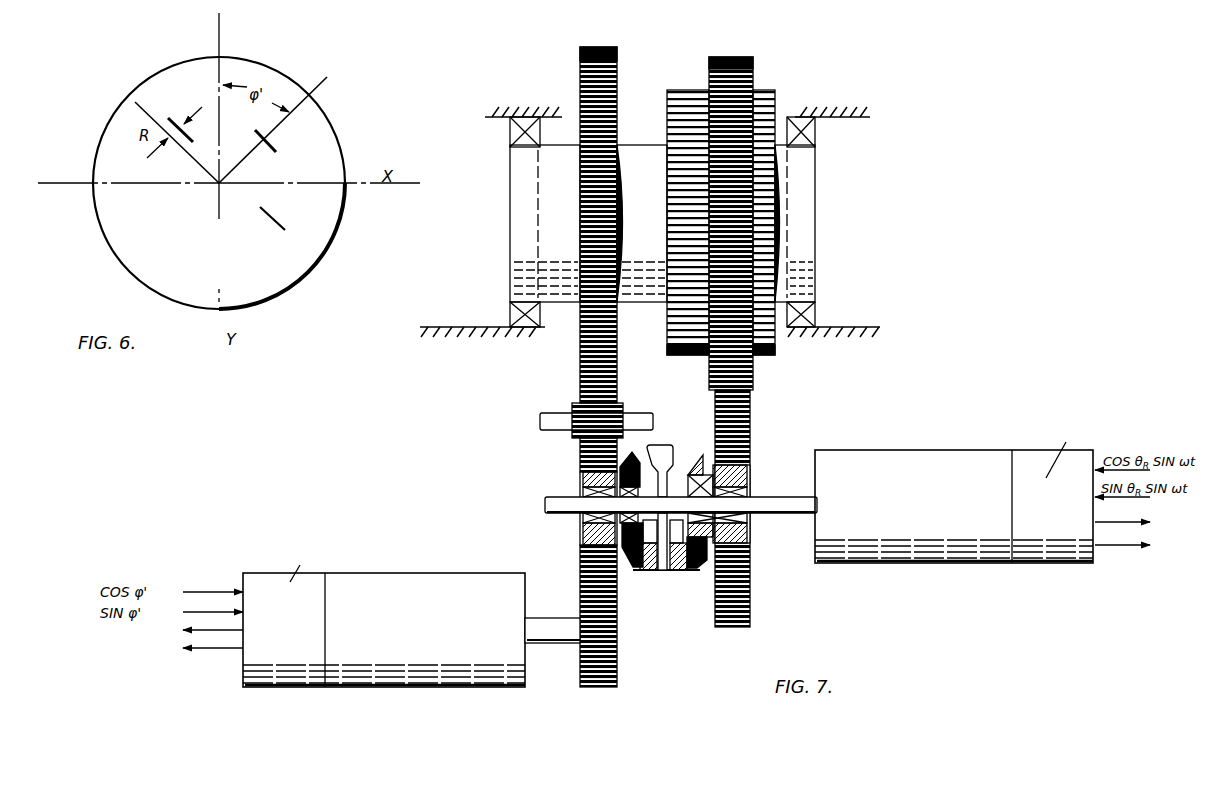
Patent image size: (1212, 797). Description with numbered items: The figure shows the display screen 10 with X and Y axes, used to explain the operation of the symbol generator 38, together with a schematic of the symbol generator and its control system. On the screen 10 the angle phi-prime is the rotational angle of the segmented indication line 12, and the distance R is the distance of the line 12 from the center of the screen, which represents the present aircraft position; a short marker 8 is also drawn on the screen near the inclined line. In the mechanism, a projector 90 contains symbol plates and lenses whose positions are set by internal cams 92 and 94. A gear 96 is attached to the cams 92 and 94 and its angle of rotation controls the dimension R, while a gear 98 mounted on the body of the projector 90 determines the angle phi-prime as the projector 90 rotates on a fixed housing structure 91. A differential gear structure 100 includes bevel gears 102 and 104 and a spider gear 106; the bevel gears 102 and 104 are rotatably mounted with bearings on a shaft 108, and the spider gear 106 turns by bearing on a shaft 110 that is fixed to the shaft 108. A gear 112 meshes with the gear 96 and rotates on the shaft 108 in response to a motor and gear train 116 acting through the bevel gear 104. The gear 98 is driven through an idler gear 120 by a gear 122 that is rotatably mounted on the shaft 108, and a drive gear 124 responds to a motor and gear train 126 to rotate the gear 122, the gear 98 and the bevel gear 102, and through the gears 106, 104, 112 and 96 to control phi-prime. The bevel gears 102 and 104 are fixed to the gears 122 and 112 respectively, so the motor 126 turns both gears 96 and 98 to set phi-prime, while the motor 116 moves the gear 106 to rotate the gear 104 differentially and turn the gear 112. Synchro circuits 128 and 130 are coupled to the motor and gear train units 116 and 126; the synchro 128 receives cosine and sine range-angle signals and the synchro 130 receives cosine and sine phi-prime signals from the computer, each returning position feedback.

In FIG. 6, the line element 8 is at (276, 147).
In FIG. 6, the screen 10 is at (270, 72).
In FIG. 6, the indication line 12 is at (273, 218).
In FIG. 7, the symbol generator 38 is at (505, 513).
In FIG. 7, the projector 90 is at (508, 268).
In FIG. 7, the fixed housing structure 91 is at (513, 112).
In FIG. 7, the internal cam 92 is at (781, 90).
In FIG. 7, the internal cam 94 is at (684, 90).
In FIG. 7, the gear 96 is at (726, 57).
In FIG. 7, the gear 98 is at (617, 92).
In FIG. 7, the differential gear structure 100 is at (686, 578).
In FIG. 7, the bevel gear 102 is at (635, 456).
In FIG. 7, the bevel gear 104 is at (750, 556).
In FIG. 7, the spider gear 106 is at (641, 571).
In FIG. 7, the shaft 108 is at (769, 500).
In FIG. 7, the shaft 110 is at (580, 525).
In FIG. 7, the gear 112 is at (750, 426).
In FIG. 7, the motor and gear train 116 is at (886, 453).
In FIG. 7, the idler gear 120 is at (617, 405).
In FIG. 7, the gear 122 is at (580, 452).
In FIG. 7, the drive gear 124 is at (600, 668).
In FIG. 7, the motor and gear train 126 is at (450, 566).
In FIG. 7, the synchro circuit 128 is at (1057, 535).
In FIG. 7, the synchro circuit 130 is at (298, 655).